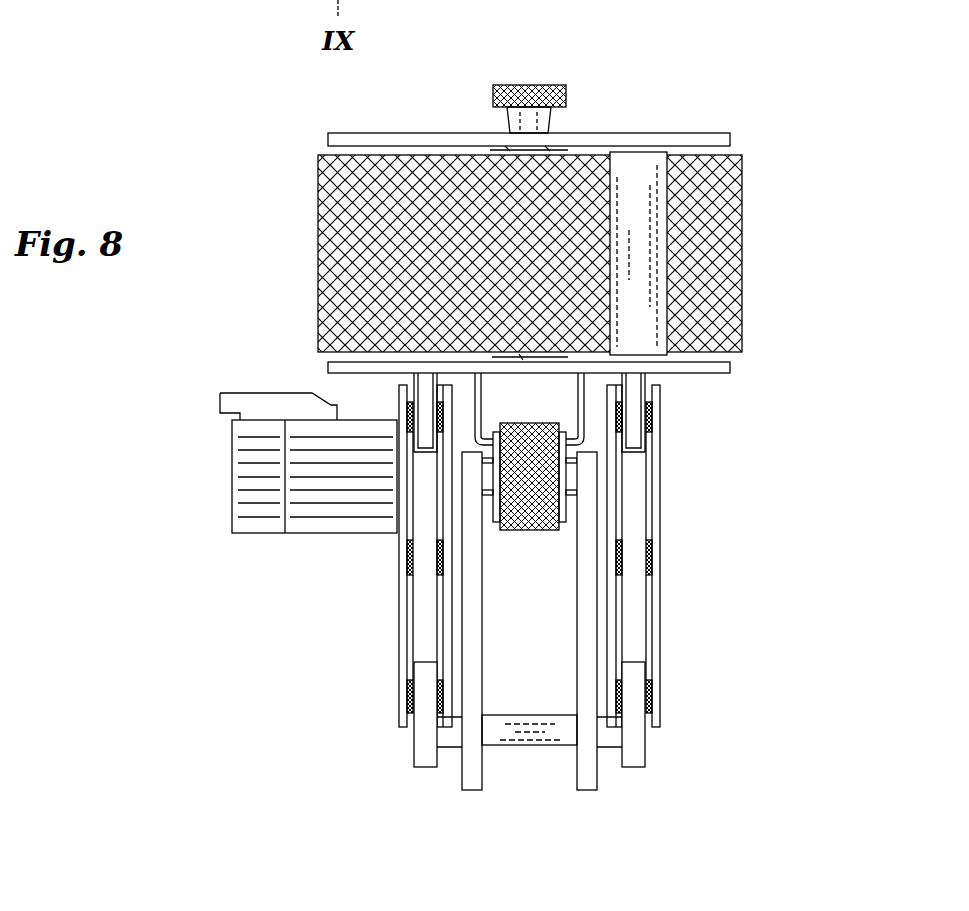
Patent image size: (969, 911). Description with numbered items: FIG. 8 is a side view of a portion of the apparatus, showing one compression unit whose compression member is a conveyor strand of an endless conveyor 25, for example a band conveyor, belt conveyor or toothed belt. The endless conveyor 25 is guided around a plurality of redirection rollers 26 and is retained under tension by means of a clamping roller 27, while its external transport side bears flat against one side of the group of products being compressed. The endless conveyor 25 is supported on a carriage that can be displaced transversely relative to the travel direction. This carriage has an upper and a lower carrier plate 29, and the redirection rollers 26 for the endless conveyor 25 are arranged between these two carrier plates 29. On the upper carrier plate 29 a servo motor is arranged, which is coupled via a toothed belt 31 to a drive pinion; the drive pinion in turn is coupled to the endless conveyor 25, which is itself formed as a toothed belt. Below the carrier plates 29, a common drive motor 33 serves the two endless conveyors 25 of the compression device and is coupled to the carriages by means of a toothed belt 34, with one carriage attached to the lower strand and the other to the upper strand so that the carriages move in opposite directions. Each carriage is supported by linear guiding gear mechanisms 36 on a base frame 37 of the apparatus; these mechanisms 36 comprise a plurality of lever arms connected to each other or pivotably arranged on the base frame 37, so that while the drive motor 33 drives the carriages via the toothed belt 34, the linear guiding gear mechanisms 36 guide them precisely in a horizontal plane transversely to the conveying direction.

The endless conveyor 25 is at (703, 242).
The redirection roller 26 is at (242, 0).
The clamping roller 27 is at (632, 173).
The carrier plate 29 is at (405, 138).
The toothed belt 31 is at (532, 87).
The drive motor 33 is at (253, 483).
The toothed belt 34 is at (525, 532).
The linear guiding gear mechanism 36 is at (399, 622).
The base frame 37 is at (590, 757).